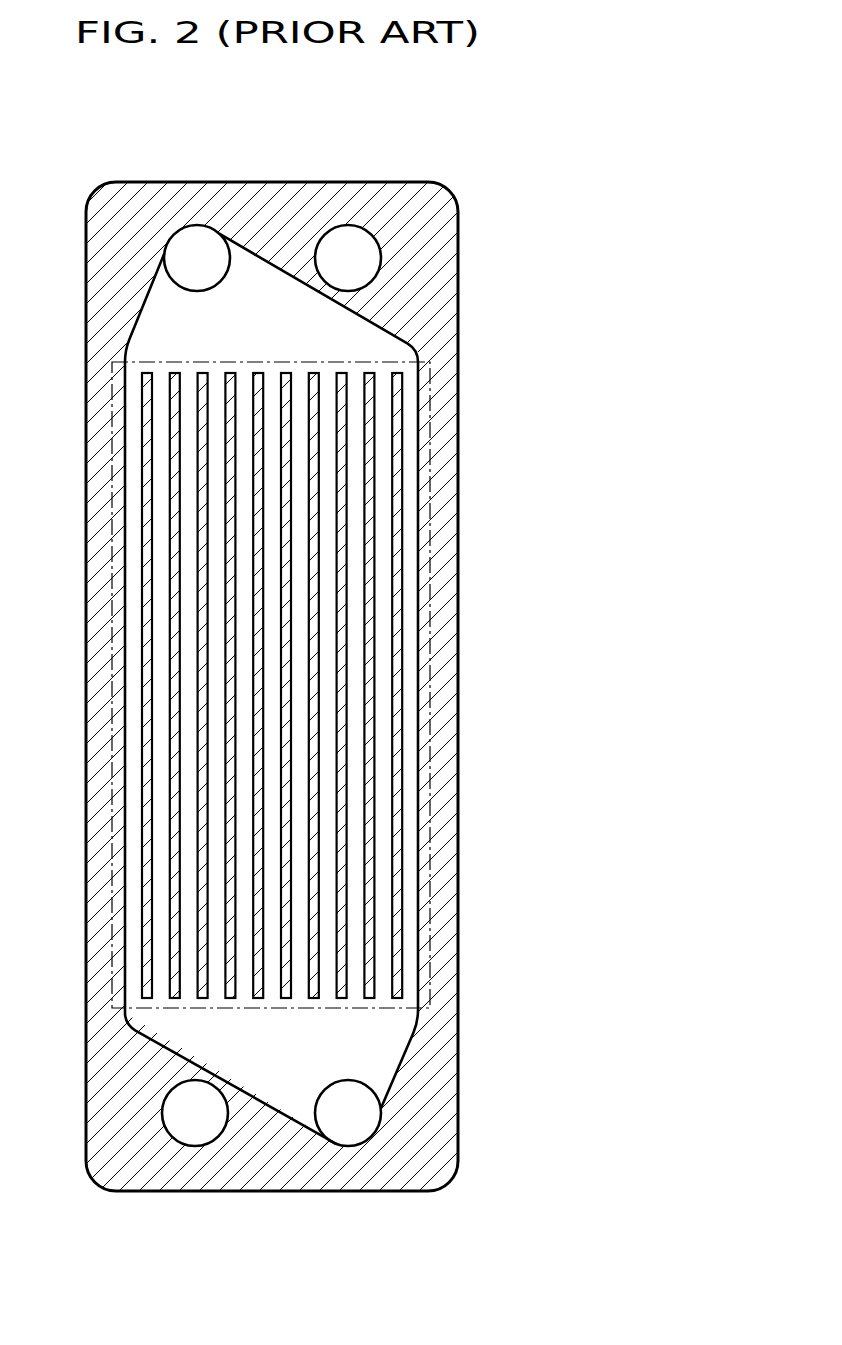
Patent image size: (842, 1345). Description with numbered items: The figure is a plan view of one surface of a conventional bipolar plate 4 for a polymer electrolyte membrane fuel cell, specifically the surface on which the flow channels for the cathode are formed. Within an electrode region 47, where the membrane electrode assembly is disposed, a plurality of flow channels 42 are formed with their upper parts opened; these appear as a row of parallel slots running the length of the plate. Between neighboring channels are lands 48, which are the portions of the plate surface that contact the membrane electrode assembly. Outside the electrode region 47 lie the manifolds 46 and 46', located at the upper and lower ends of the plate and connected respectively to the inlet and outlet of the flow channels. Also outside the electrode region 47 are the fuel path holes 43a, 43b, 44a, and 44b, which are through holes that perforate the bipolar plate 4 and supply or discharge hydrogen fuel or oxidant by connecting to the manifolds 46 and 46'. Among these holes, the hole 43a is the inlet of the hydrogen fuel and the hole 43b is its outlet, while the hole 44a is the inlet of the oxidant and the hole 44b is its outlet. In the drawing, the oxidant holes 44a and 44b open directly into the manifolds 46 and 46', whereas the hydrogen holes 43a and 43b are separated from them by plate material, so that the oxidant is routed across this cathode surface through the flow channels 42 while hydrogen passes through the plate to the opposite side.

The bipolar plate 4 is at (458, 905).
The flow channels 42 is at (385, 468).
The inlet of the hydrogen fuel 43a is at (195, 1137).
The outlet of the hydrogen fuel 43b is at (350, 237).
The inlet of the oxidant 44a is at (197, 237).
The outlet of the oxidant 44b is at (350, 1137).
The manifold 46 is at (222, 617).
The manifold 46' is at (318, 912).
The electrode region 47 is at (430, 688).
The lands 48 is at (380, 580).